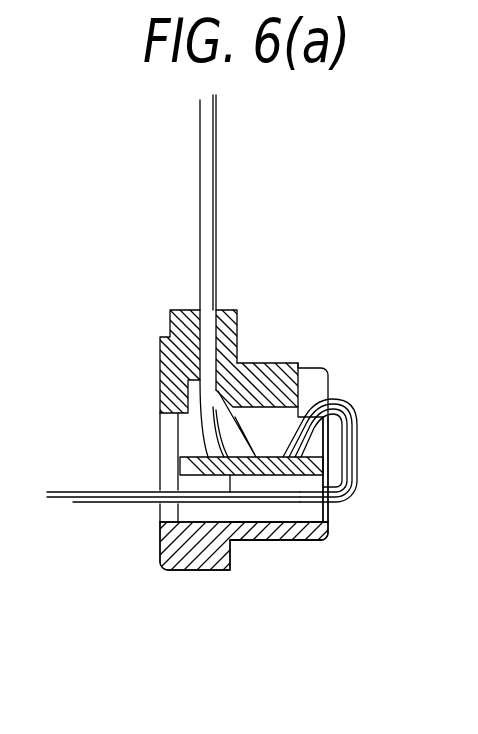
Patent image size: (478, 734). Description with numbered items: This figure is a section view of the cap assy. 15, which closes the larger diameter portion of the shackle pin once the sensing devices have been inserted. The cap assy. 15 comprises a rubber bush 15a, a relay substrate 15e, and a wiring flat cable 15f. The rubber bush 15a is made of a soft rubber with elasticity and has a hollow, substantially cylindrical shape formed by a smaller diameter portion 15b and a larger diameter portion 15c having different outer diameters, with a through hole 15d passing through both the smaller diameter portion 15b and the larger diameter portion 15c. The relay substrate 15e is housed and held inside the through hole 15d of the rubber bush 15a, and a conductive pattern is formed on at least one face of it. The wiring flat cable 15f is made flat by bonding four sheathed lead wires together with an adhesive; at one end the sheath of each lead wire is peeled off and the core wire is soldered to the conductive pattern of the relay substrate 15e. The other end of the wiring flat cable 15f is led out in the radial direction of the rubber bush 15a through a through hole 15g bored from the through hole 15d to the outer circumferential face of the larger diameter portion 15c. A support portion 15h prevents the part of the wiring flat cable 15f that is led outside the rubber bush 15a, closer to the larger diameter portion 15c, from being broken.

The cap assy. 15 is at (150, 563).
The rubber bush 15a is at (274, 362).
The smaller diameter portion 15b is at (202, 571).
The larger diameter portion 15c is at (288, 541).
The through hole 15d is at (305, 527).
The relay substrate 15e is at (325, 470).
The wiring flat cable 15f is at (200, 214).
The through hole 15g is at (201, 319).
The support portion 15h is at (230, 310).